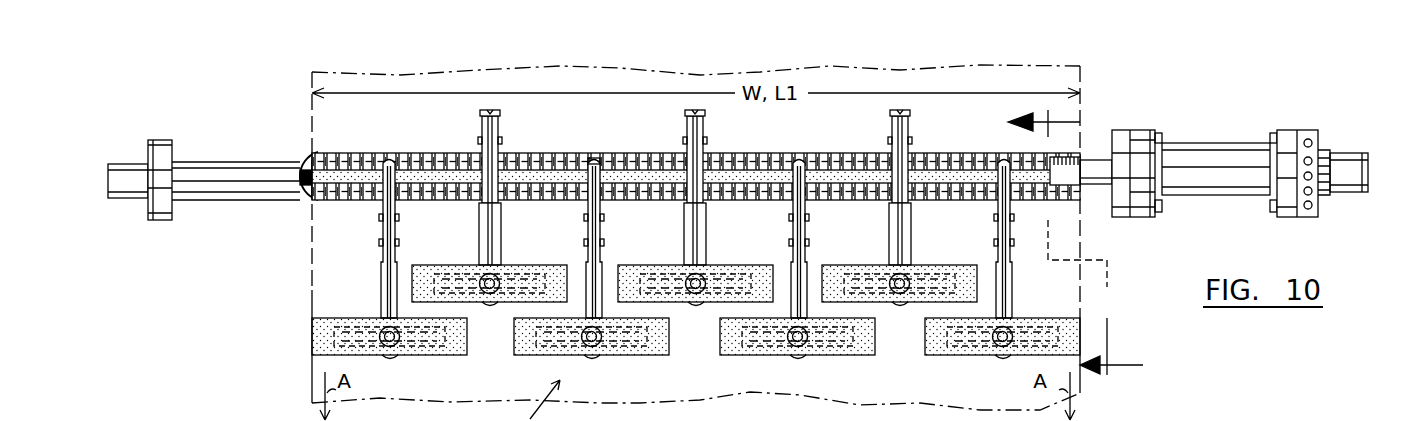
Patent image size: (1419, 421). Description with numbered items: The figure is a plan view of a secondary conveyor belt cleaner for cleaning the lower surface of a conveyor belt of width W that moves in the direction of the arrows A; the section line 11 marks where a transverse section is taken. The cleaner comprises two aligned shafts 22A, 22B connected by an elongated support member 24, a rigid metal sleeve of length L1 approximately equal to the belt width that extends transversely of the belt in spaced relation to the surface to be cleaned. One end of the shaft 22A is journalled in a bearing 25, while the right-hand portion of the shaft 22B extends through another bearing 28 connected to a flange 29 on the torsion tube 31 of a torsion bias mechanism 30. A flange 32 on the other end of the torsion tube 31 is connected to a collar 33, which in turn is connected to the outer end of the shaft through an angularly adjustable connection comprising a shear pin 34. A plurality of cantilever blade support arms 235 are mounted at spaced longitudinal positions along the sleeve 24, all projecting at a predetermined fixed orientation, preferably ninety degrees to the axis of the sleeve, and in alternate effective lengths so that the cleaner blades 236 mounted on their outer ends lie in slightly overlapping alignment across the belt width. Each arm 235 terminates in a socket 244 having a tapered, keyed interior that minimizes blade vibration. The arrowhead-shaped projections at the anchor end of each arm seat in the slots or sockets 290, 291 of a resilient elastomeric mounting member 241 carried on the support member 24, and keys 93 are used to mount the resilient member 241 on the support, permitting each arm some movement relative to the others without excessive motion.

The shaft 22A is at (205, 178).
The shaft 22B is at (1093, 180).
The bearing 25 is at (173, 213).
The keys 93 is at (314, 151).
The support member 24 is at (696, 167).
The slots or sockets 290 is at (977, 158).
The slots or sockets 291 is at (567, 181).
The resilient elastomeric mounting member 241 is at (603, 160).
The cantilever blade support arms 235 is at (379, 283).
The cleaner blades 236 is at (424, 273).
The socket 244 is at (489, 308).
The section line XI-XI 11 is at (1075, 238).
The bearing 28 is at (1124, 137).
The flange 29 is at (1143, 135).
The torsion bias mechanism 30 is at (1254, 162).
The torsion tube 31 is at (1208, 175).
The flange 32 is at (1282, 132).
The collar 33 is at (1312, 214).
The shear pin 34 is at (1336, 157).